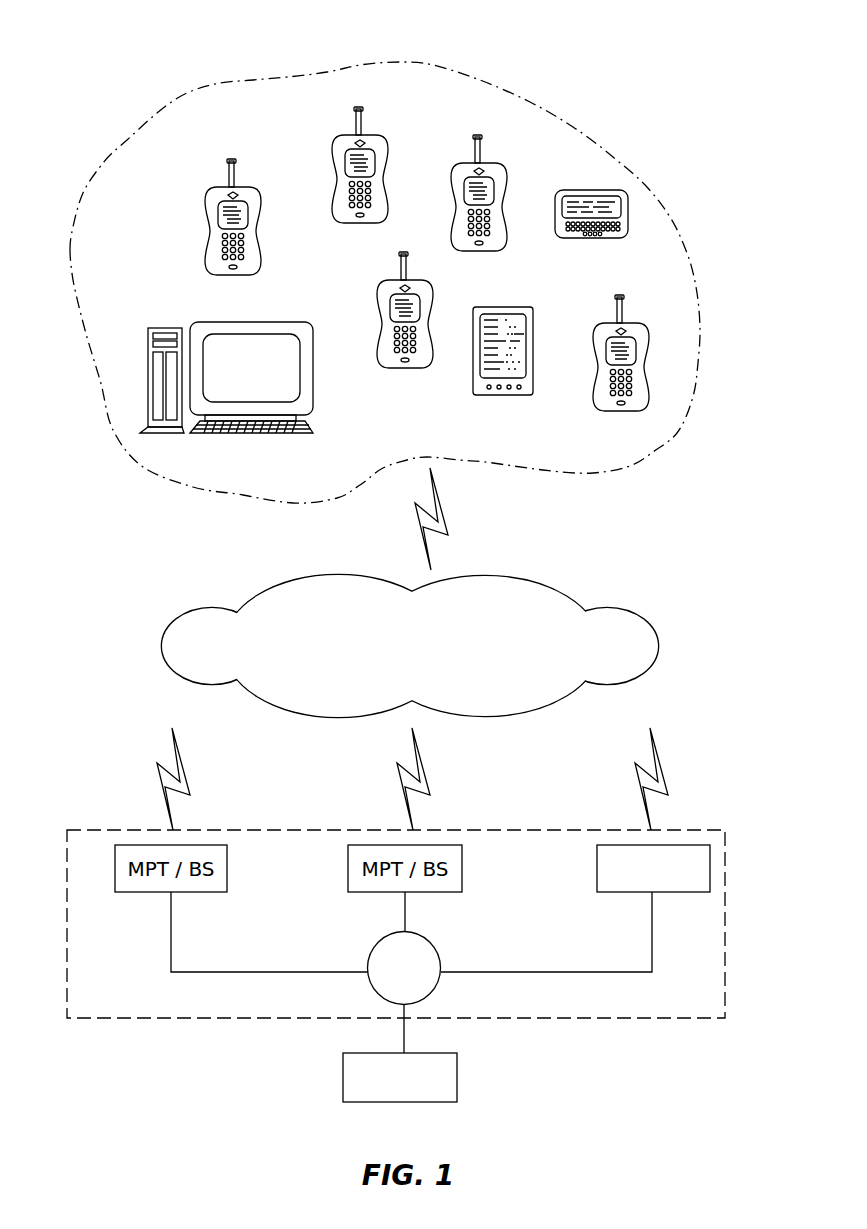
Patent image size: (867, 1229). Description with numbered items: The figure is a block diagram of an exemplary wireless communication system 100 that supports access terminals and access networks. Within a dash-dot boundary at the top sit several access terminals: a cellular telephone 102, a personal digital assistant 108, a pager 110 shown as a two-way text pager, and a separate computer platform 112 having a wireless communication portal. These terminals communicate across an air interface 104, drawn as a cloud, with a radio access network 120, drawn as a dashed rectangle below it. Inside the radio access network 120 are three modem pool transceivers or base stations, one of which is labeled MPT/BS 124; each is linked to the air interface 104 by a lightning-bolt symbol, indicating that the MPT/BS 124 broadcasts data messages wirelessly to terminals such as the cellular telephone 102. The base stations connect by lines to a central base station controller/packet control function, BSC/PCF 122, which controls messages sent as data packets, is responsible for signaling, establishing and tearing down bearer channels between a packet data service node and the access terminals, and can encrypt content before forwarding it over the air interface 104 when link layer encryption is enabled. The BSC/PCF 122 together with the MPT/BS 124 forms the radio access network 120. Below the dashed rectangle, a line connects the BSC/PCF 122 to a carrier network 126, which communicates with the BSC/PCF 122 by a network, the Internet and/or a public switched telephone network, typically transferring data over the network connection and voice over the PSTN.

The wireless communication system 100 is at (402, 253).
The cellular telephone 102 is at (379, 135).
The air interface 104 is at (657, 637).
The personal digital assistant 108 is at (473, 367).
The pager 110 is at (597, 240).
The computer platform 112 is at (247, 322).
The radio access network 120 is at (695, 830).
The base station controller/packet control function 122 is at (434, 945).
The modem pool transceiver/base station 124 is at (628, 892).
The carrier network 126 is at (457, 1077).